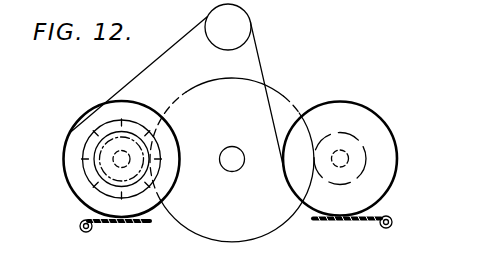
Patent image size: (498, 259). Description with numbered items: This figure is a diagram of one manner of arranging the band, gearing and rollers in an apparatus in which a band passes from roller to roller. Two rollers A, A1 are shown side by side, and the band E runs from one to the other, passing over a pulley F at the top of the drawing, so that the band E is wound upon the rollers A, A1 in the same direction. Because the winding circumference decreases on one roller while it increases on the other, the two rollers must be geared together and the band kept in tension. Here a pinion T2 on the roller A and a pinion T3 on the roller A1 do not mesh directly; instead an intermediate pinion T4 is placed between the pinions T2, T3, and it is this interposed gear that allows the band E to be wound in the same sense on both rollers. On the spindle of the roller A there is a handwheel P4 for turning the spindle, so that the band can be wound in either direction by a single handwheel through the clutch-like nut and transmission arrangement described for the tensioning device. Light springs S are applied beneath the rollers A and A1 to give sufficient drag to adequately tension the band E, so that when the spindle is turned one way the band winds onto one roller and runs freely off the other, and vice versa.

The roller A is at (78, 131).
The roller A1 is at (340, 159).
The band E is at (152, 63).
The pulley F is at (228, 27).
The handwheel P4 is at (87, 176).
The light spring S is at (123, 223).
The pinion T2 is at (125, 131).
The pinion T3 is at (366, 164).
The intermediate pinion T4 is at (214, 79).